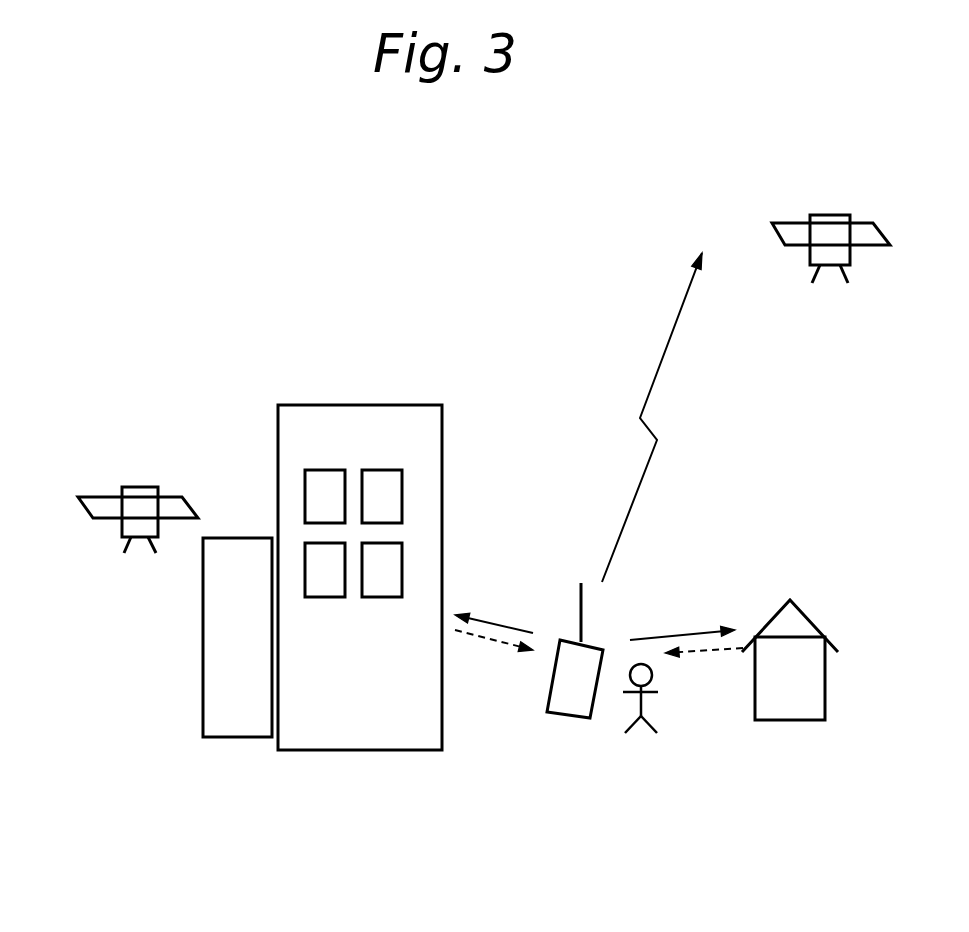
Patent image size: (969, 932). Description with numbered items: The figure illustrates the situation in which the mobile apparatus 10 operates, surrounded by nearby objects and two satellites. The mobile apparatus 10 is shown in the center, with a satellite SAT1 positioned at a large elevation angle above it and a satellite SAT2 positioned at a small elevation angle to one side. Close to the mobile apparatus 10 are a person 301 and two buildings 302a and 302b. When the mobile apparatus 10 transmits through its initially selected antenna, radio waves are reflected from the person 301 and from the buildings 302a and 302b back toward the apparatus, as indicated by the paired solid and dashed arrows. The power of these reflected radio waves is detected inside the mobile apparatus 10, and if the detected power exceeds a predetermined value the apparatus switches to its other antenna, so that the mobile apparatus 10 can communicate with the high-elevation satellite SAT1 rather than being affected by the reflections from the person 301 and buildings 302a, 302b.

The mobile apparatus 10 is at (563, 718).
The person 301 is at (640, 730).
The building 302a is at (792, 720).
The building 302b is at (350, 752).
The satellite SAT1 is at (802, 255).
The satellite SAT2 is at (170, 485).